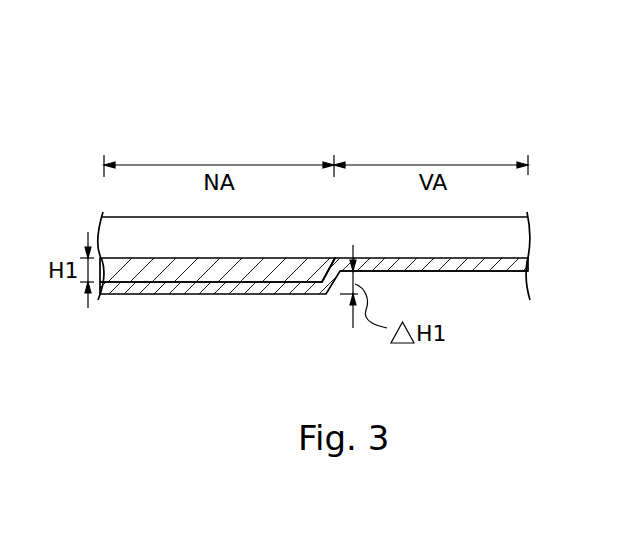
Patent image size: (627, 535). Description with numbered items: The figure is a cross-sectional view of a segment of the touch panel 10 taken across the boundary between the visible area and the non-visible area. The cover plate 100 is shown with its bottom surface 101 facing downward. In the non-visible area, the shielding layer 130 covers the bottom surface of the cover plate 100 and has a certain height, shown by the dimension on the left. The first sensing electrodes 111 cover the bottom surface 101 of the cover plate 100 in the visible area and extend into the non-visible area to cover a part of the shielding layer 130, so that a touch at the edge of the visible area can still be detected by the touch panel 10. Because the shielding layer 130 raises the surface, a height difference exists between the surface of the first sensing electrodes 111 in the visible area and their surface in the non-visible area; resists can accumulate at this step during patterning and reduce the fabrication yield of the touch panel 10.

The touch panel 10 is at (110, 83).
The cover plate 100 is at (529, 232).
The first sensing electrodes 111 is at (529, 266).
The shielding layer 130 is at (168, 274).
The bottom surface 101 is at (485, 271).